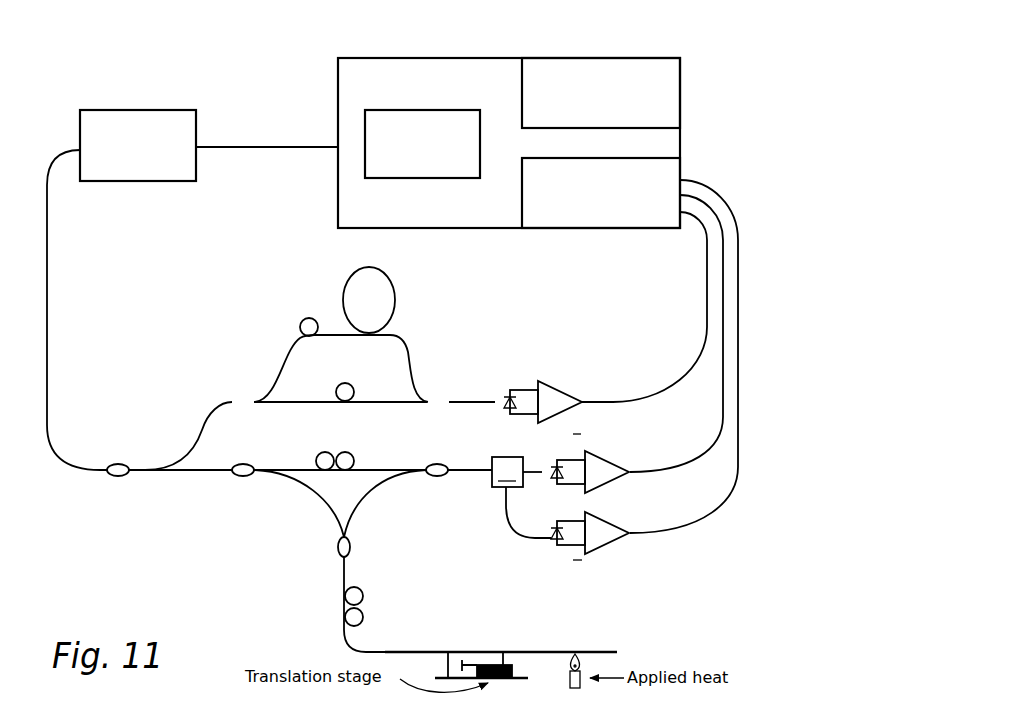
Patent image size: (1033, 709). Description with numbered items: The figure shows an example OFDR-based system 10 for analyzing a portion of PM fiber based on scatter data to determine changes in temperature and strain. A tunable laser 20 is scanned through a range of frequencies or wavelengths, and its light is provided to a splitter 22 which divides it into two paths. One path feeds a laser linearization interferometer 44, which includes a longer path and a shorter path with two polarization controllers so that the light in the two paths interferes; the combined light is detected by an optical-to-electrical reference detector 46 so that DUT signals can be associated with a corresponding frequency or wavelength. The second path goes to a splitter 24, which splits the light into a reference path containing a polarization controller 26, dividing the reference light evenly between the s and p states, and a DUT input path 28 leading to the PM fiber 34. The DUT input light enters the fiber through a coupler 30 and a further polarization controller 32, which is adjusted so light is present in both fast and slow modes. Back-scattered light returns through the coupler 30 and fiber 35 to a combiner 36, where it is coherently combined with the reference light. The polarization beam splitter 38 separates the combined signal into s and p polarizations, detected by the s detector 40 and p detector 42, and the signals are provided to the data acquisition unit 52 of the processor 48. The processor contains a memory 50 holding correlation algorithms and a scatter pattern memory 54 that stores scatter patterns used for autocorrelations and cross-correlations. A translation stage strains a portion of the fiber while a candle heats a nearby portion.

The OFDR-based system 10 is at (62, 47).
The tunable laser 20 is at (150, 110).
The splitter 22 is at (112, 477).
The splitter 24 is at (243, 477).
The polarization controller PC3 26 is at (353, 456).
The DUT input path 28 is at (306, 487).
The coupler 30 is at (352, 546).
The polarization controller PC4 32 is at (344, 598).
The PM fiber 34 is at (501, 640).
The fiber 35 is at (367, 493).
The combiner 36 is at (440, 478).
The polarization beam splitter 38 is at (520, 487).
The s detector 40 is at (637, 344).
The p detector 42 is at (644, 379).
The laser linearization interferometer 44 is at (262, 362).
The reference detector 46 is at (605, 317).
The processor 48 is at (488, 58).
The memory 50 is at (575, 130).
The data acquisition unit 52 is at (612, 158).
The scatter pattern memory 54 is at (421, 178).